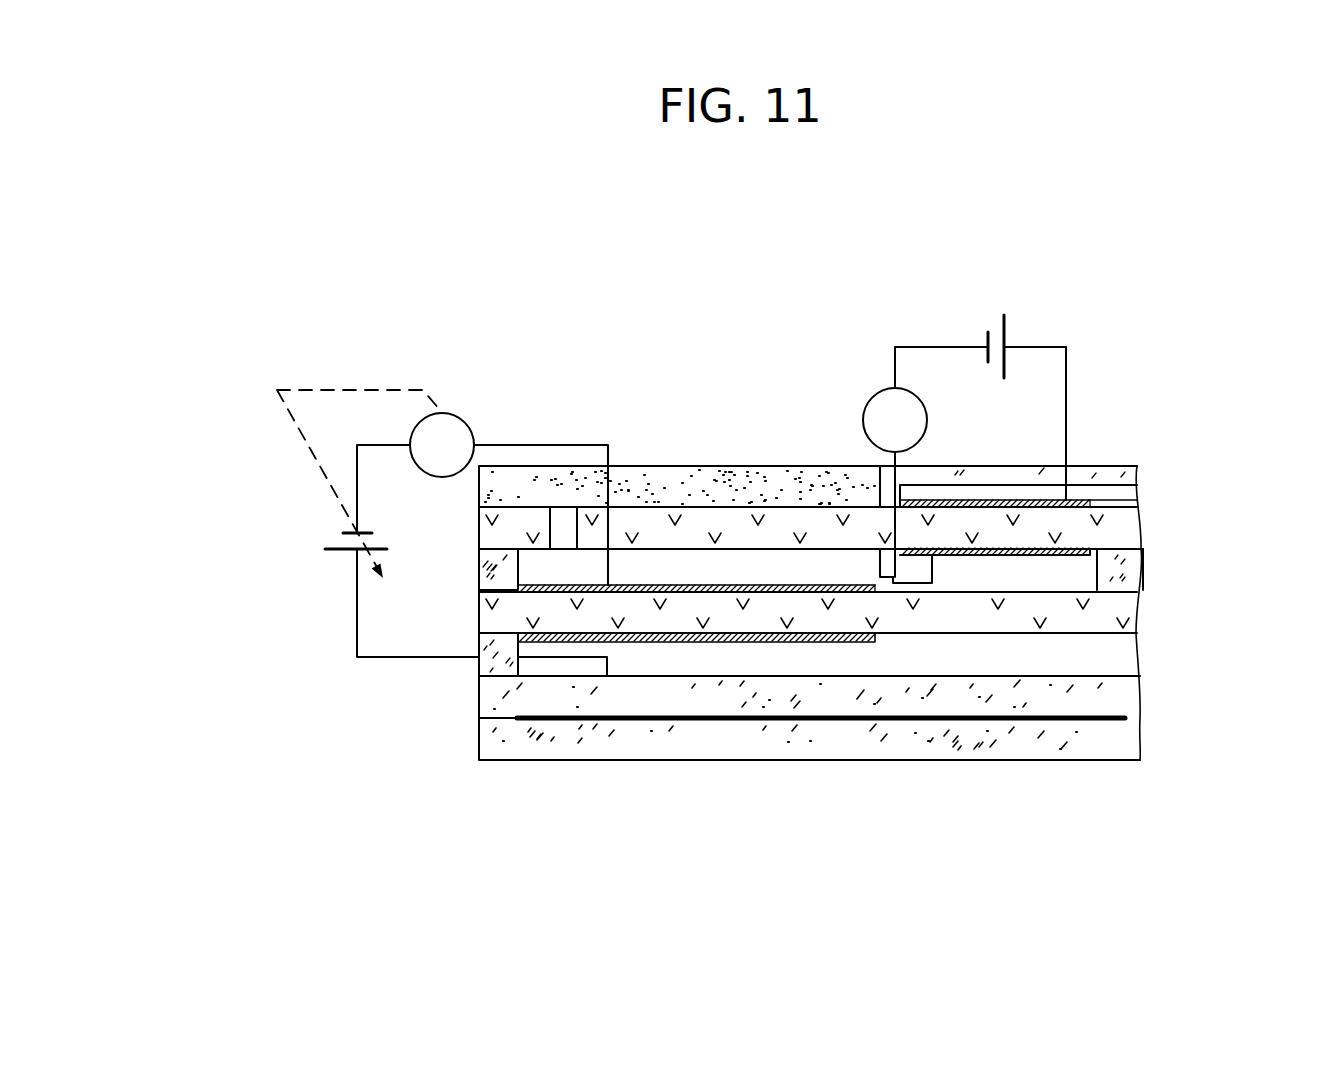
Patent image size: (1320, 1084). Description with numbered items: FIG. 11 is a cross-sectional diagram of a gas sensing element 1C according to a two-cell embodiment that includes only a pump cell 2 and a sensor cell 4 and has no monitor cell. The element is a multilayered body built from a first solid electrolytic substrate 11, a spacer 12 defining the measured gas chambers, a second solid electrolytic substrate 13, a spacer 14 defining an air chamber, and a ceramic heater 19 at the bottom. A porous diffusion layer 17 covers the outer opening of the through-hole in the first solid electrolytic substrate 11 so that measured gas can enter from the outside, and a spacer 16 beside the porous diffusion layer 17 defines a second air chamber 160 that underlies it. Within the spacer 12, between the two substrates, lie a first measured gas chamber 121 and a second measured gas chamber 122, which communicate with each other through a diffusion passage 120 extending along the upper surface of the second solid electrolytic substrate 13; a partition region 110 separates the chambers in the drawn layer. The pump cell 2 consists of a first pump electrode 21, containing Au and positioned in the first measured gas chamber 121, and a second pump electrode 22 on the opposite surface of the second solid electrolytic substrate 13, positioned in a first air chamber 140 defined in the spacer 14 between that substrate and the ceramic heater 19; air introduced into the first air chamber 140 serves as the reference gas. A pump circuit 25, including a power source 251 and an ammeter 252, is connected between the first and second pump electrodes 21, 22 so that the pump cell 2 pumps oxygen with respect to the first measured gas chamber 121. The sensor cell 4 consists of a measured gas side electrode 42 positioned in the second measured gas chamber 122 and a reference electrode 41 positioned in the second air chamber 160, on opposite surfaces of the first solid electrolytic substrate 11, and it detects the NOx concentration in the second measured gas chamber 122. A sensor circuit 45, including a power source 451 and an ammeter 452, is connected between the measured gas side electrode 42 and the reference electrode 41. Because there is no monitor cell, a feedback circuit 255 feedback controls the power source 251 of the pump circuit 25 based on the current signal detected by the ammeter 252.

The gas sensing element 1C is at (1008, 216).
The pump cell 2 is at (638, 558).
The sensor cell 4 is at (995, 590).
The first solid electrolytic substrate 11 is at (488, 532).
The spacer 12 is at (487, 578).
The second solid electrolytic substrate 13 is at (490, 617).
The spacer 14 is at (482, 664).
The spacer 16 is at (1118, 477).
The porous diffusion layer 17 is at (717, 490).
The ceramic heater 19 is at (1142, 676).
The first pump electrode 21 is at (755, 590).
The second pump electrode 22 is at (825, 644).
The pump circuit 25 is at (384, 659).
The reference electrode 41 is at (1135, 505).
The measured gas side electrode 42 is at (1060, 556).
The sensor circuit 45 is at (1066, 397).
The partition 110 is at (565, 527).
The diffusion passage 120 is at (883, 595).
The first measured gas chamber 121 is at (678, 567).
The second measured gas chamber 122 is at (953, 568).
The first air chamber 140 is at (1072, 657).
The second air chamber 160 is at (958, 490).
The power source 251 is at (330, 547).
The ammeter 252 is at (452, 414).
The feedback circuit 255 is at (330, 388).
The power source 451 is at (1004, 330).
The ammeter 452 is at (877, 392).